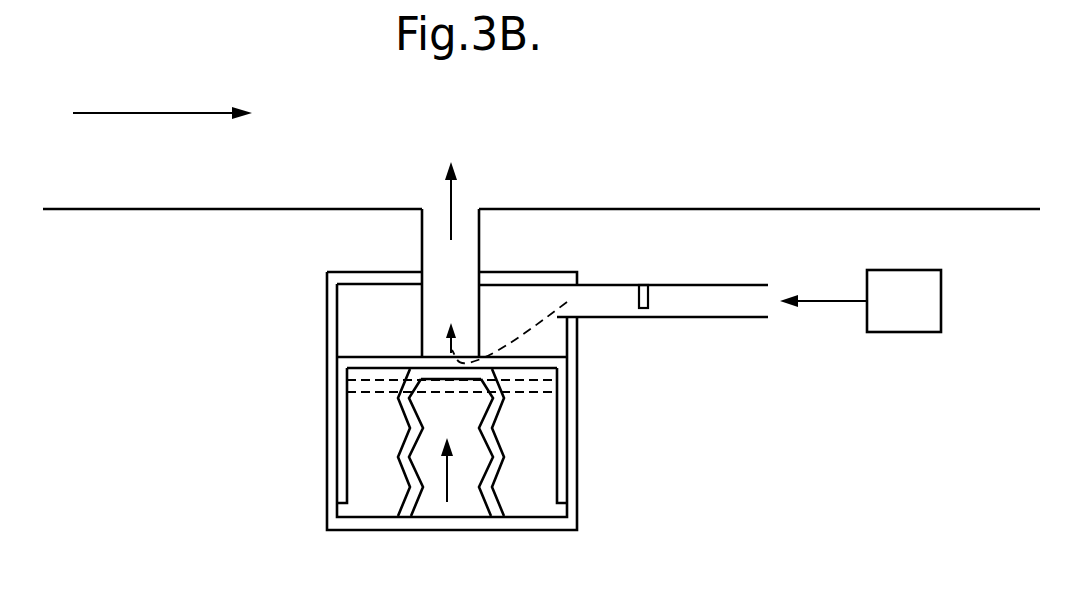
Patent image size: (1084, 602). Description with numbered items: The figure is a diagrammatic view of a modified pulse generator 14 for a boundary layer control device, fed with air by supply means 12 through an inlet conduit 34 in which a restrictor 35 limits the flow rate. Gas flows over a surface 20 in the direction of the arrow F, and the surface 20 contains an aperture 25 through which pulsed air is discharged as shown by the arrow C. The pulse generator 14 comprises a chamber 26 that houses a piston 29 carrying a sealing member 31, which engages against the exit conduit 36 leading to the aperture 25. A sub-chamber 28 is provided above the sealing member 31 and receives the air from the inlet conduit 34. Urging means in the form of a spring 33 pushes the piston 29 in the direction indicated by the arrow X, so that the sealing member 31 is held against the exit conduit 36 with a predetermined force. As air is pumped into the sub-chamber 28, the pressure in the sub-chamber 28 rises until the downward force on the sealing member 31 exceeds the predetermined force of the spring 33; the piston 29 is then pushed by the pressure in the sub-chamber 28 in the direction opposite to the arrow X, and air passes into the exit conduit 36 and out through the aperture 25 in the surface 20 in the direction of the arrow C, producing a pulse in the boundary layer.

The supply means 12 is at (903, 332).
The pulse generator 14 is at (283, 366).
The surface 20 is at (97, 207).
The aperture 25 is at (465, 210).
The chamber 26 is at (306, 309).
The sub-chamber 28 is at (387, 315).
The piston 29 is at (326, 446).
The sealing member 31 is at (360, 357).
The spring 33 is at (418, 506).
The inlet conduit 34 is at (682, 318).
The restrictor 35 is at (653, 292).
The exit conduit 36 is at (480, 240).
The flow direction arrow F is at (143, 113).
The air exit arrow C is at (456, 172).
The spring urging direction arrow X is at (450, 483).